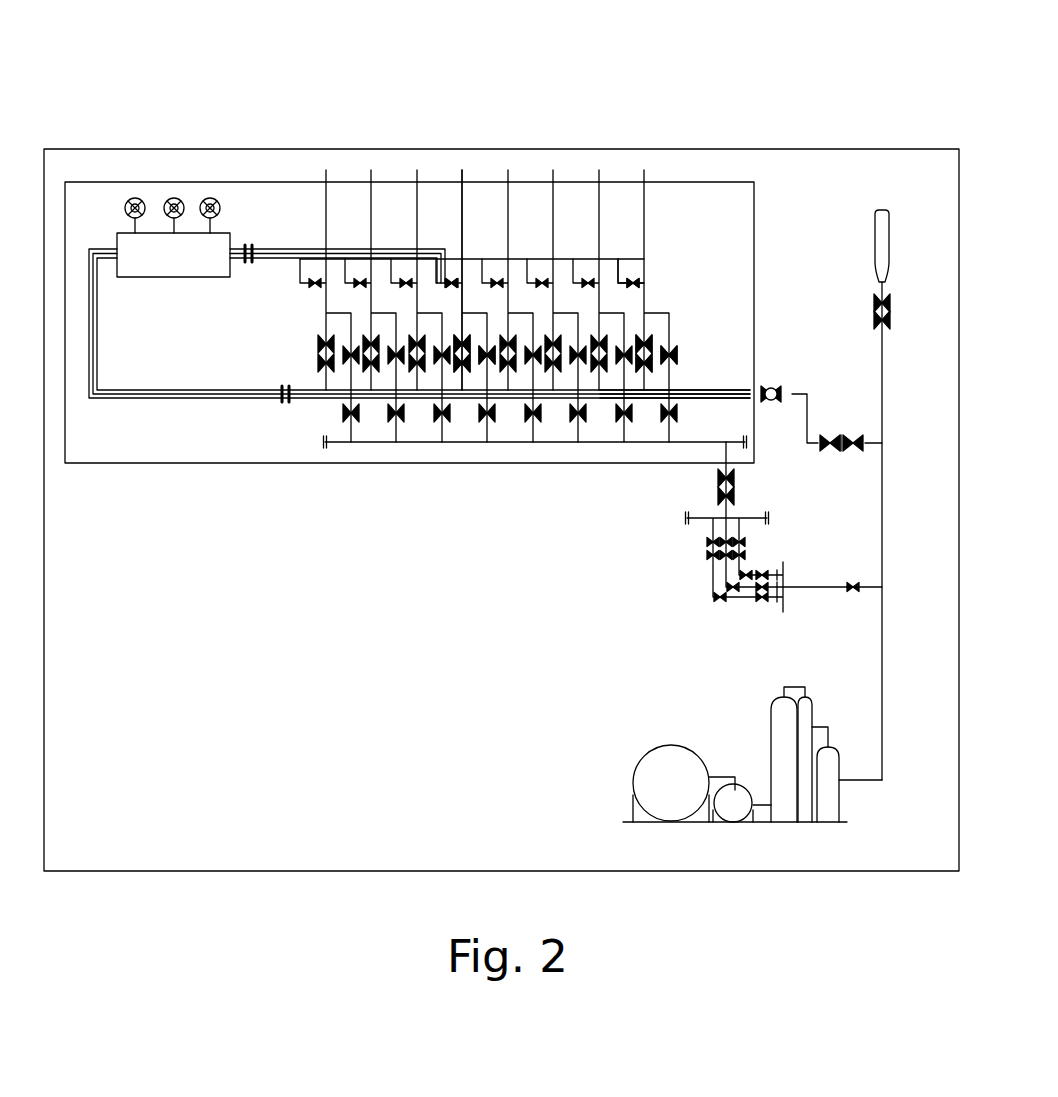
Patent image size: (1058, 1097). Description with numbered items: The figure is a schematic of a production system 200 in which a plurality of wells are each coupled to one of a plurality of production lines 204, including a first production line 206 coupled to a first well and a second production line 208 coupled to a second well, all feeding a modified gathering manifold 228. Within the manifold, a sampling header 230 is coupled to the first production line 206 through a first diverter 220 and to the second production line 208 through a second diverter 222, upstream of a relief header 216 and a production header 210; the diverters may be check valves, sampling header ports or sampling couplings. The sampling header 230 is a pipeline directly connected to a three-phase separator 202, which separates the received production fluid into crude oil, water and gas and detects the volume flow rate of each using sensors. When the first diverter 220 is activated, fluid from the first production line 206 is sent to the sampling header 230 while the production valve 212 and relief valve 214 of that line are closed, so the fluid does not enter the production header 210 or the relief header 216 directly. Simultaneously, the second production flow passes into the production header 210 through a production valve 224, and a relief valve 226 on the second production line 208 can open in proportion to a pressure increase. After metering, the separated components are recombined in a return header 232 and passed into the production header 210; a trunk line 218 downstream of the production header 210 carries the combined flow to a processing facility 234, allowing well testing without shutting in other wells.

The production system 200 is at (797, 70).
The three-phase separator 202 is at (173, 279).
The plurality of production lines 204 is at (615, 108).
The first production line 206 is at (463, 190).
The second production line 208 is at (645, 240).
The production header 210 is at (712, 402).
The production valve 212 is at (460, 360).
The relief valve 214 is at (487, 362).
The relief header 216 is at (643, 445).
The trunk line 218 is at (878, 335).
The first diverter 220 is at (446, 283).
The second diverter 222 is at (640, 283).
The production valve 224 is at (644, 345).
The relief valve 226 is at (672, 357).
The modified gathering manifold 228 is at (205, 465).
The sampling header 230 is at (293, 247).
The return header 232 is at (175, 402).
The processing facility 234 is at (622, 787).